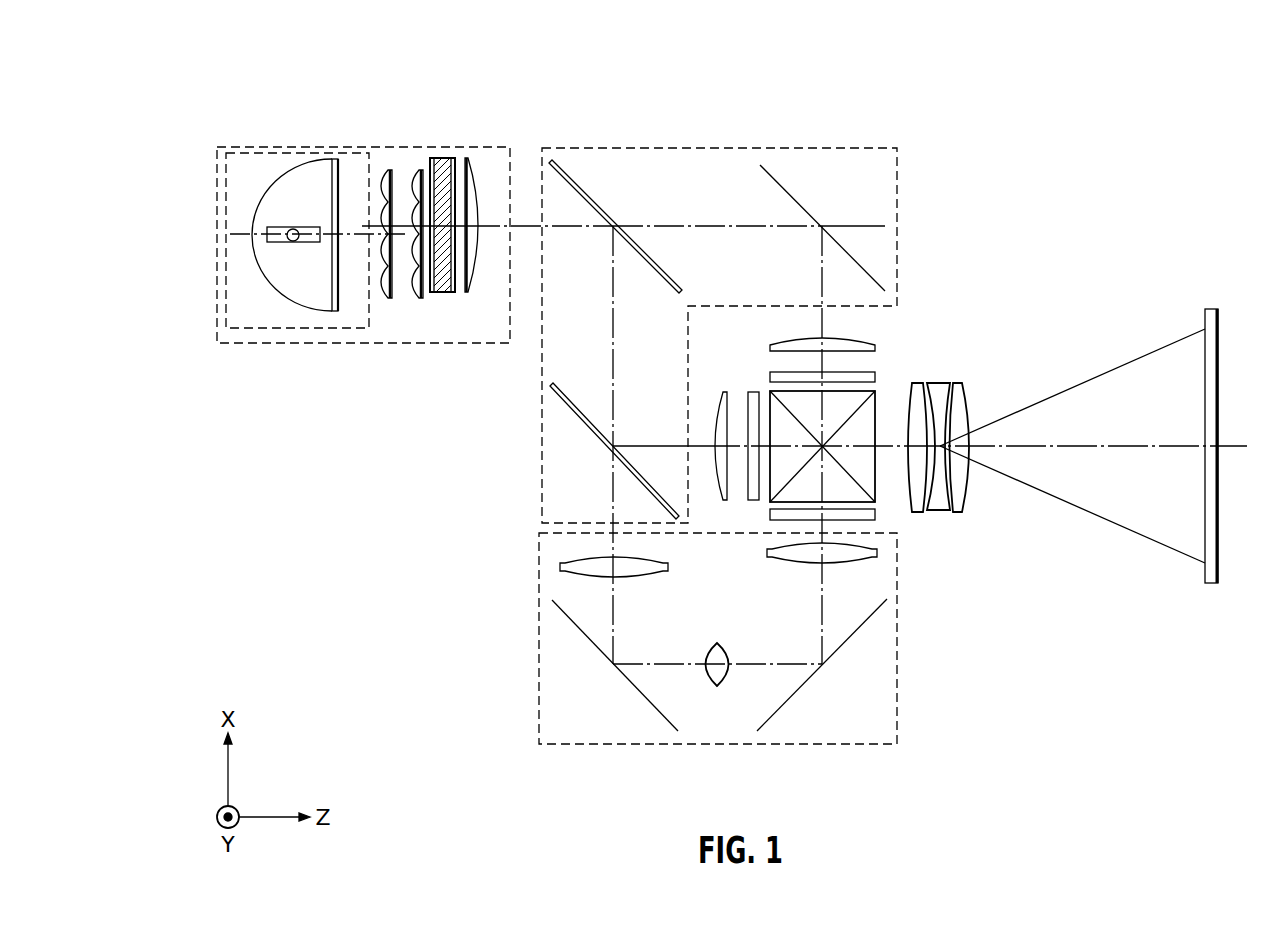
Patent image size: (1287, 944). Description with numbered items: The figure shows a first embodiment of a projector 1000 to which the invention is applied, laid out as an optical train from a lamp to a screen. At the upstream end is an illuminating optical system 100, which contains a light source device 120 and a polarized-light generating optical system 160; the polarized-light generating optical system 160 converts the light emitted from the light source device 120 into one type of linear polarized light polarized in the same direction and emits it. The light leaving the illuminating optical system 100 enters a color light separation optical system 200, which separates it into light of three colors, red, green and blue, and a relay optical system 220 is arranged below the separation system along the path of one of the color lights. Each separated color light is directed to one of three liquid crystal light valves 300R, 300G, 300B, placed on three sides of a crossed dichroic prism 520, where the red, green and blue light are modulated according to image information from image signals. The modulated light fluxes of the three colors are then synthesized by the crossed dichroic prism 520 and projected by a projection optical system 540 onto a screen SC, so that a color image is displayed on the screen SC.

The projector 1000 is at (210, 92).
The illuminating optical system 100 is at (348, 147).
The light source device 120 is at (311, 330).
The polarized-light generating optical system 160 is at (441, 158).
The color light separation optical system 200 is at (603, 148).
The relay optical system 220 is at (539, 608).
The liquid crystal light valve 300R is at (768, 377).
The liquid crystal light valve 300G is at (750, 392).
The liquid crystal light valve 300B is at (876, 512).
The crossed dichroic prism 520 is at (877, 408).
The projection optical system 540 is at (942, 383).
The screen SC is at (1218, 368).